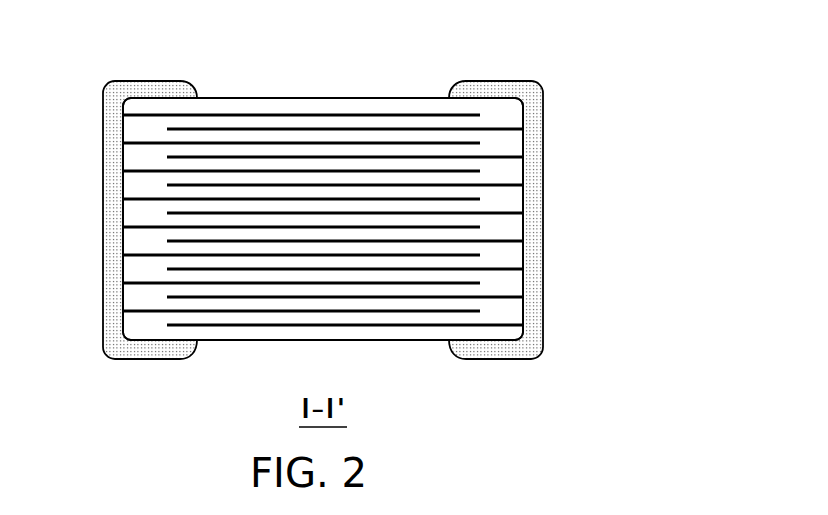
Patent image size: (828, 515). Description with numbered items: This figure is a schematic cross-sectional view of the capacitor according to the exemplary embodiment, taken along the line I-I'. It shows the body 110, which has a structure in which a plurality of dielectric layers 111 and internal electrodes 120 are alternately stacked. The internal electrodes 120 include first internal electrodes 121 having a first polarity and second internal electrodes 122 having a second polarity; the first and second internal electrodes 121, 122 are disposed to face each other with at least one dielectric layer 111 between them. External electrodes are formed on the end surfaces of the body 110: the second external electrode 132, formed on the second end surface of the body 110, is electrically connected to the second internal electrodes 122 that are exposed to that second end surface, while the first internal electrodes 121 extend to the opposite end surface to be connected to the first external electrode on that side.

The body 110 is at (404, 187).
The dielectric layer 111 is at (508, 117).
The internal electrodes 120 is at (404, 220).
The first internal electrode 121 is at (507, 158).
The second internal electrode 122 is at (475, 200).
The second external electrode 132 is at (527, 82).